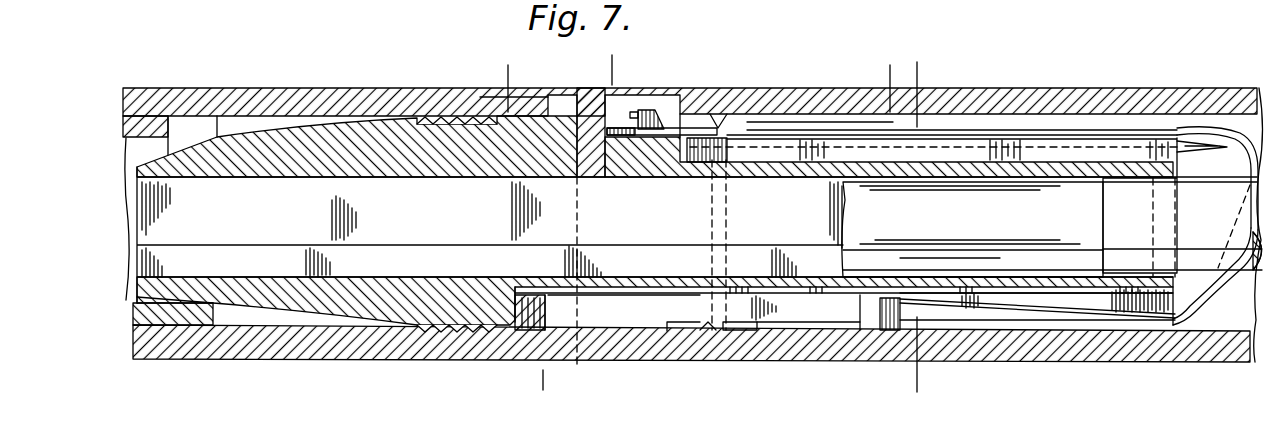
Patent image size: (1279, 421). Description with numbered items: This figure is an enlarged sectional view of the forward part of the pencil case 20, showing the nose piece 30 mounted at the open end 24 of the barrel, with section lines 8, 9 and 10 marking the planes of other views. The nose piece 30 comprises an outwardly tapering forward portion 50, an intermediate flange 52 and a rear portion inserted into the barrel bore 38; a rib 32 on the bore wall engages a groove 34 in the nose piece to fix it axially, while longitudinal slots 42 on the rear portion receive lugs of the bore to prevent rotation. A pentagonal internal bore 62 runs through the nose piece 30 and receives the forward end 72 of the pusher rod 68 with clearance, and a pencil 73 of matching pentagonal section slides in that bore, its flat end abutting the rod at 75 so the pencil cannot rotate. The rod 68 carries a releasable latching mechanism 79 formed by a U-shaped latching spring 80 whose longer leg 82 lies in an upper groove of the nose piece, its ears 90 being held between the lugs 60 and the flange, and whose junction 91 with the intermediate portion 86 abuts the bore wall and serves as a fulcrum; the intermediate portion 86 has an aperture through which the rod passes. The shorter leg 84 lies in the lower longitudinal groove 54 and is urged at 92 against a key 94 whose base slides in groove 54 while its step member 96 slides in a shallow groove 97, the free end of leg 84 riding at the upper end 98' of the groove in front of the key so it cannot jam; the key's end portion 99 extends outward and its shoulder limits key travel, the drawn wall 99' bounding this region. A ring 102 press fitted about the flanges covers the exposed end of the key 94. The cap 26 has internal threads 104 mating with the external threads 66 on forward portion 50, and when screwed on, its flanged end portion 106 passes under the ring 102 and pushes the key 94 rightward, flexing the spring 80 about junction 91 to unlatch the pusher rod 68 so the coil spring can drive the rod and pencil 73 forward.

The tool assembly 20 is at (1090, 84).
The open end 24 is at (697, 121).
The cap 26 is at (293, 79).
The nose piece 30 is at (367, 305).
The rib 32 is at (700, 330).
The groove 34 is at (722, 213).
The bore 38 is at (757, 330).
The longitudinal slots 42 is at (1183, 157).
The forward portion 50 is at (340, 137).
The intermediate flange 52 is at (573, 345).
The lower longitudinal groove 54 is at (1043, 315).
The lugs 60 is at (658, 110).
The internal bore 62 is at (810, 220).
The threads 66 is at (475, 113).
The pusher rod 68 is at (1207, 203).
The forward end 72 is at (1133, 190).
The pencil 73 is at (1033, 186).
The abutment 75 is at (1104, 190).
The releasable latching mechanism 79 is at (998, 136).
The U-shaped latching spring 80 is at (1200, 129).
The leg 82 is at (817, 128).
The leg 84 is at (1020, 313).
The intermediate portion 86 is at (1223, 287).
The ears 90 is at (620, 126).
The junction 91 is at (1242, 124).
The abutting contact 92 is at (893, 307).
The key 94 is at (827, 313).
The step member 96 is at (865, 290).
The shallow groove 97 is at (1000, 290).
The upper end of groove 98' is at (844, 279).
The end portion 99 is at (624, 345).
The chamber wall 99' is at (675, 363).
The ring 102 is at (541, 88).
The internal threads 104 is at (425, 333).
The flanged end portion 106 is at (515, 335).
The section line 8- 8 is at (598, 69).
The section line 9- 9 is at (512, 105).
The section line 10- 10 is at (927, 69).